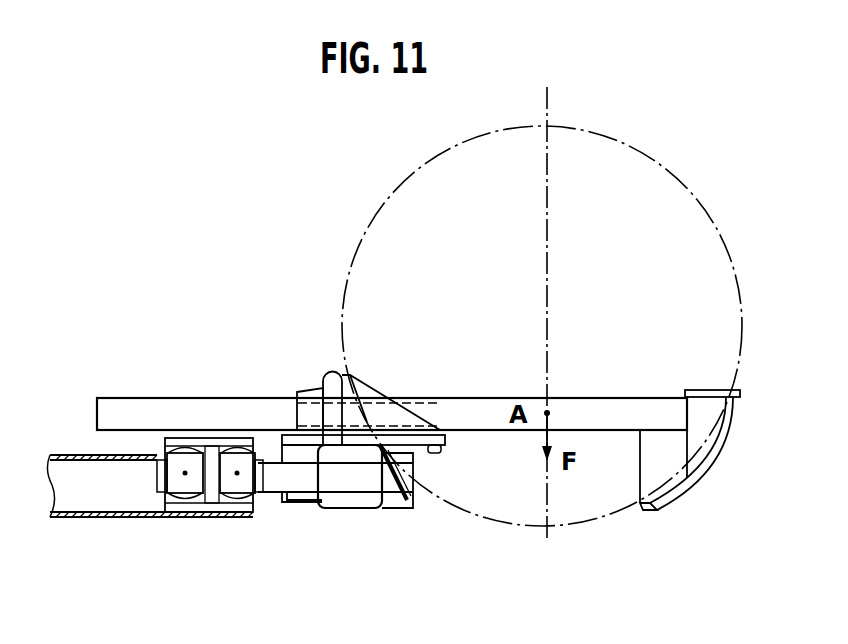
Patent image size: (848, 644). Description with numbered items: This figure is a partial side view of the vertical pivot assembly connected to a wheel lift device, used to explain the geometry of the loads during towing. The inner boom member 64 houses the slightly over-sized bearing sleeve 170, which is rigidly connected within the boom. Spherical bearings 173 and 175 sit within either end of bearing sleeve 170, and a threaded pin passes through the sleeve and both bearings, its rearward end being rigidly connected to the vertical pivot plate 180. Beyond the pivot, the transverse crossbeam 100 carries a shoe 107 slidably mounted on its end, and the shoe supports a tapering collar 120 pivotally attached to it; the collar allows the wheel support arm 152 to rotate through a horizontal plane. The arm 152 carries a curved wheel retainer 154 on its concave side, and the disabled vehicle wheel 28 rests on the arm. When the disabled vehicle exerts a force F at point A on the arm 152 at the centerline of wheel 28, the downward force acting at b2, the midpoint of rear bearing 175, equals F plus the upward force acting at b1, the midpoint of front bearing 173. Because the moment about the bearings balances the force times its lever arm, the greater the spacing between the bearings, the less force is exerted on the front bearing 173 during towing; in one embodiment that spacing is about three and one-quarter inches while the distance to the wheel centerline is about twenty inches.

The disabled vehicle wheel 28 is at (628, 147).
The inner boom member 64 is at (74, 523).
The crossbeam 100 is at (353, 520).
The shoe 107 is at (407, 508).
The collar 120 is at (378, 408).
The arm 152 is at (632, 404).
The wheel retainer 154 is at (677, 500).
The bearing sleeve 170 is at (183, 511).
The spherical bearing 173 is at (188, 455).
The spherical bearing 175 is at (243, 457).
The vertical pivot plate 180 is at (284, 477).
The midpoint of bearing 173 b1 is at (167, 482).
The midpoint of bearing 175 b2 is at (224, 483).